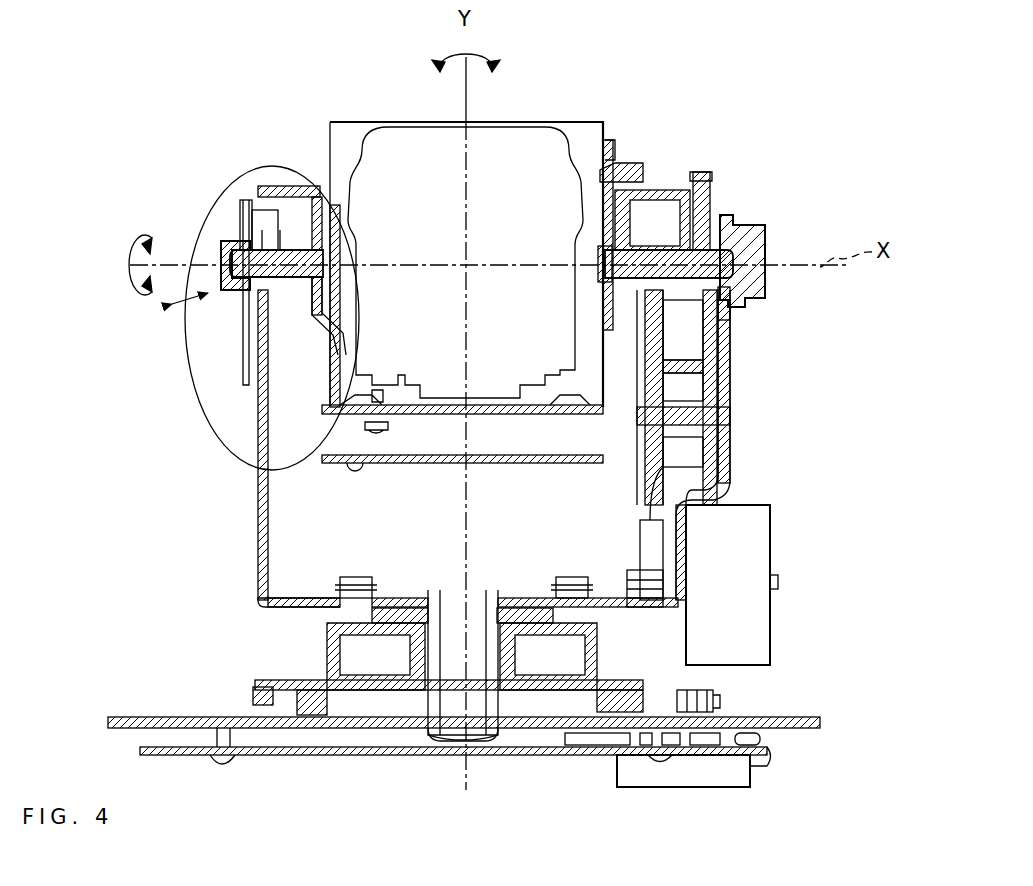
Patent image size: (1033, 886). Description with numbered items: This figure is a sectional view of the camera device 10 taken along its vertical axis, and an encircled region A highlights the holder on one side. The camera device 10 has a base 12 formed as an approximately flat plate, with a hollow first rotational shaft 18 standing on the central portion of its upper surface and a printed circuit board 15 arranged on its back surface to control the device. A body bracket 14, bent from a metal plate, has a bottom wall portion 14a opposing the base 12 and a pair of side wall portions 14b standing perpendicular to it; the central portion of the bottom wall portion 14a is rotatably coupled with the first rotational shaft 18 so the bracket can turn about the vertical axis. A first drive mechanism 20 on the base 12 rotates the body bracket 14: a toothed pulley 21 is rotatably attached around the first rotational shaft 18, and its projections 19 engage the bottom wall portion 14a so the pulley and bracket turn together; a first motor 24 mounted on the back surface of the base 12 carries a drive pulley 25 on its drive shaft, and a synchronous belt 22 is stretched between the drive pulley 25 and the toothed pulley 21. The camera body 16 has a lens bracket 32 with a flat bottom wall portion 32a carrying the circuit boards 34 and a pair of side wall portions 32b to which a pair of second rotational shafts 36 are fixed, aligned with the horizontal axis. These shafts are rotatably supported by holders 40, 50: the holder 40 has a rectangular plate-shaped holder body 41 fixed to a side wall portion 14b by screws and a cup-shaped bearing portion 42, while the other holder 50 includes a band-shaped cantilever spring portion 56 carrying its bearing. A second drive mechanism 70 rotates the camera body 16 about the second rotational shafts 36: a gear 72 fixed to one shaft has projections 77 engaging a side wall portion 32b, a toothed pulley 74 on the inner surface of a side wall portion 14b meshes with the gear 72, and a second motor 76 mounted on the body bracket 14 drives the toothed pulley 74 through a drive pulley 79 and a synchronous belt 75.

The camera device 10 is at (88, 246).
The base 12 is at (130, 716).
The body bracket 14 is at (254, 505).
The bottom wall portion 14a is at (300, 598).
The side wall portions 14b is at (262, 565).
The printed circuit board 15 is at (280, 757).
The camera body 16 is at (522, 130).
The first rotational shaft 18 is at (444, 735).
The projections 19 is at (356, 578).
The first drive mechanism 20 is at (642, 792).
The toothed pulley 21 is at (330, 648).
The synchronous belt 22 is at (252, 694).
The first motor 24 is at (708, 788).
The drive pulley 25 is at (700, 690).
The lens bracket 32 is at (554, 376).
The bottom wall portion 32a is at (525, 428).
The side wall portions 32b is at (610, 140).
The circuit boards 34 is at (425, 442).
The second rotational shafts 36 is at (294, 240).
The holder 40 is at (780, 236).
The holder body 41 is at (735, 315).
The bearing portion 42 is at (782, 290).
The holder 50 is at (218, 203).
The spring portion 56 is at (244, 352).
The second drive mechanism 70 is at (770, 490).
The gear 72 is at (690, 188).
The toothed pulley 74 is at (730, 358).
The synchronous belt 75 is at (648, 556).
The second motor 76 is at (760, 553).
The projections 77 is at (590, 185).
The drive pulley 79 is at (650, 607).
The region A is at (250, 170).